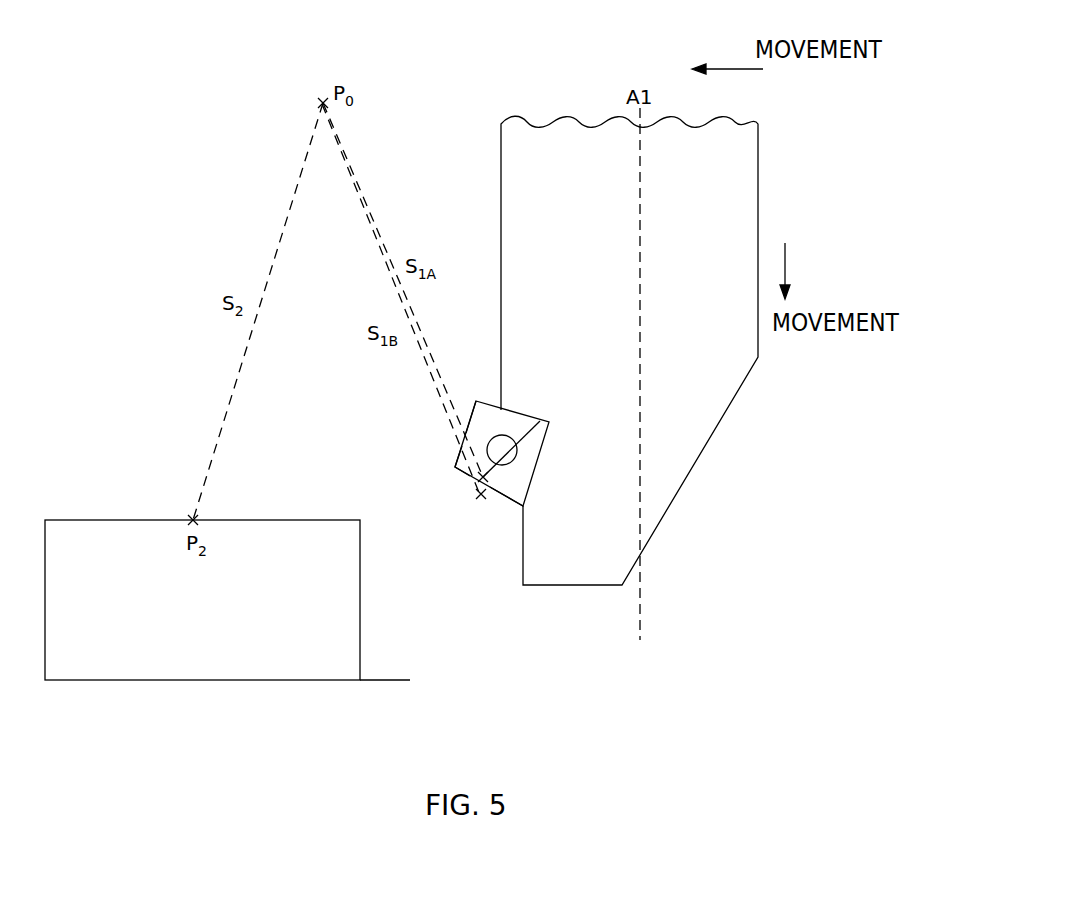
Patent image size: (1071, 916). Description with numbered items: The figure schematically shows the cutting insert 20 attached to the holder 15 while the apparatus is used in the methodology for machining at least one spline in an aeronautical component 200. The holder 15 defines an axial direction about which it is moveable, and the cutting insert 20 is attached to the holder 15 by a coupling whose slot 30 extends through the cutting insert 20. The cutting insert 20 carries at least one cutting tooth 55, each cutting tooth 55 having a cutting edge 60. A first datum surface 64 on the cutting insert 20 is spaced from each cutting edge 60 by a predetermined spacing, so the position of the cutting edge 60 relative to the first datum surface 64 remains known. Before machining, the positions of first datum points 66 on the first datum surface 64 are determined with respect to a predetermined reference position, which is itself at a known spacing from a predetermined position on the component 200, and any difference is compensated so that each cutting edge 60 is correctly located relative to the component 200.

The holder 15 is at (700, 452).
The cutting insert 20 is at (527, 468).
The slot 30 is at (514, 457).
The cutting tooth 55 is at (463, 424).
The cutting edge 60 is at (458, 470).
The first datum surface 64 is at (511, 500).
The first datum point 66 is at (572, 378).
The aeronautical component 200 is at (275, 681).